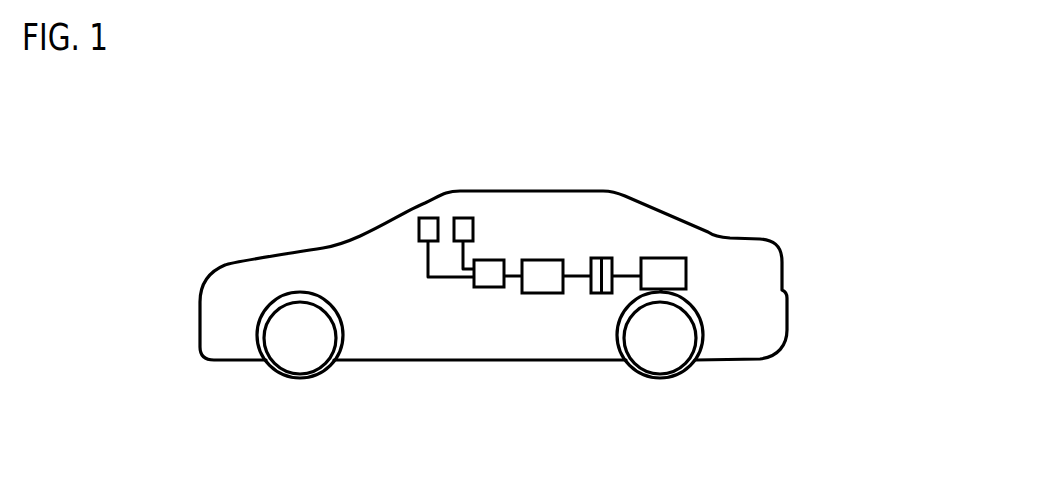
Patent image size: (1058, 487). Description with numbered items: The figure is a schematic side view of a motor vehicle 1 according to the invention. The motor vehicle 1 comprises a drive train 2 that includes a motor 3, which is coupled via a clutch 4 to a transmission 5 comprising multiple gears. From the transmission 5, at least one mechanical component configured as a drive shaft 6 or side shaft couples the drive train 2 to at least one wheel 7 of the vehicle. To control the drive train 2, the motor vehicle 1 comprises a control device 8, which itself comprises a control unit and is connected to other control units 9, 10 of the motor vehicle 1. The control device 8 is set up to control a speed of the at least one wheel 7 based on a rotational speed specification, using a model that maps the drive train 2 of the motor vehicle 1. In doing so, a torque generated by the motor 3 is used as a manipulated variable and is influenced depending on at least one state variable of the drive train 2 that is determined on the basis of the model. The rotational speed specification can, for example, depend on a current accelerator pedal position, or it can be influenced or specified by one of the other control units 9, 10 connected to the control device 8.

The motor vehicle 1 is at (689, 183).
The drive train 2 is at (537, 251).
The motor 3 is at (545, 278).
The clutch 4 is at (597, 283).
The transmission 5 is at (667, 272).
The drive shaft 6 is at (668, 300).
The wheel 7 is at (663, 351).
The control device 8 is at (485, 278).
The control unit 9 is at (424, 228).
The control unit 10 is at (462, 228).